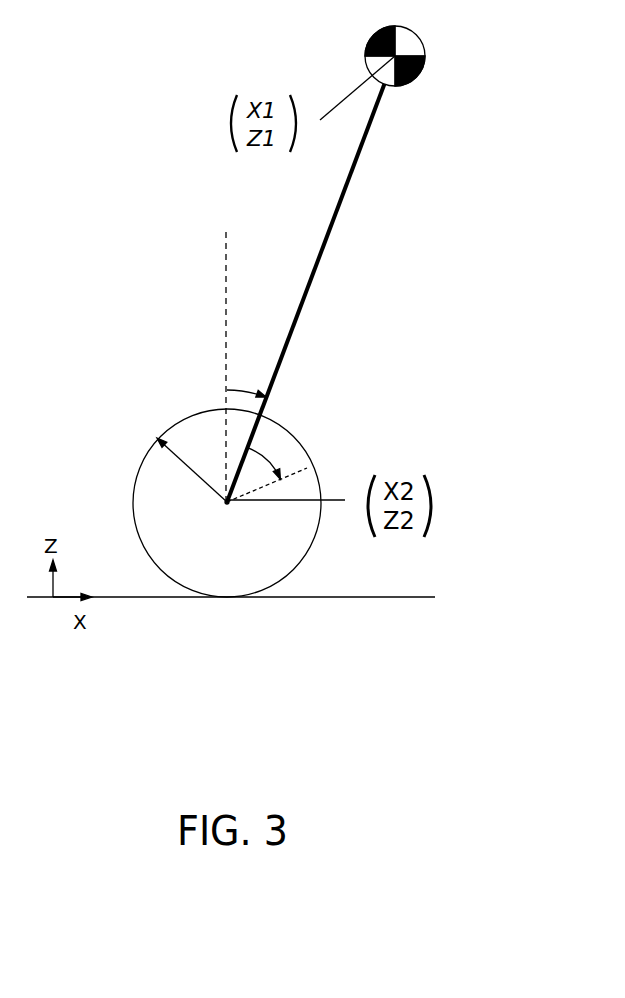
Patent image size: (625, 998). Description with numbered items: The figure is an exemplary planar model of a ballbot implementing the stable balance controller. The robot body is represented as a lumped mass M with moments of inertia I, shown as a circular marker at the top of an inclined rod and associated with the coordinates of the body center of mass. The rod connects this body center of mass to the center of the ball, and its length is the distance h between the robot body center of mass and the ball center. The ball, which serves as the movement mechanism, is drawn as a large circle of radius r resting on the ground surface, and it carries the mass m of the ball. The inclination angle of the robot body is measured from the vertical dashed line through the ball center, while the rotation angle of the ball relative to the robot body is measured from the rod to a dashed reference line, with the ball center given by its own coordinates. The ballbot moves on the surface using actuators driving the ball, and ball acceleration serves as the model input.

The mass of the robot body M is at (365, 73).
The distance between the robot body center of mass and ball center h is at (305, 293).
The radius of the ball r is at (174, 463).
The mass of the ball or movement mechanism m is at (227, 503).